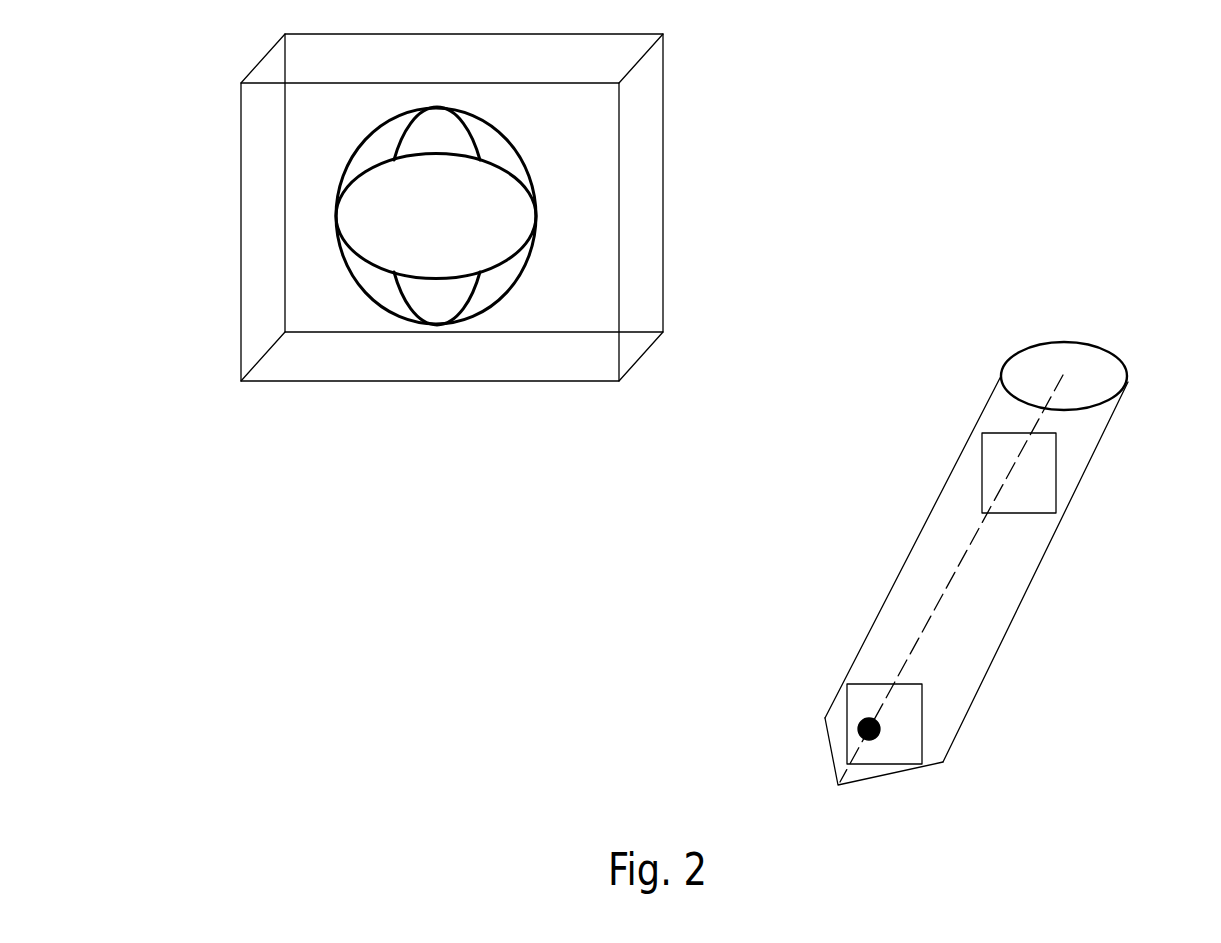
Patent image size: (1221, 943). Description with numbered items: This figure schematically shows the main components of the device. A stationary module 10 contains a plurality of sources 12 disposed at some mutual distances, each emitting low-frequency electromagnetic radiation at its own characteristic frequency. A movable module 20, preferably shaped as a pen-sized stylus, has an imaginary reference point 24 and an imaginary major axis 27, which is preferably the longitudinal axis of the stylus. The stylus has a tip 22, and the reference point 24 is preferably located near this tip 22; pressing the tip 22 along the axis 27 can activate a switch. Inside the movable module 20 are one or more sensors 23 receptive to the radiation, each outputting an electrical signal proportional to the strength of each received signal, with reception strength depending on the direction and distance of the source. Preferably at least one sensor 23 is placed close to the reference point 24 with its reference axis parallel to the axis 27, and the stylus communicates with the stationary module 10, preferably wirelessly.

The stationary module 10 is at (660, 82).
The sources 12 is at (397, 138).
The movable module 20 is at (1045, 560).
The tip 22 is at (878, 777).
The sensors 23 is at (1056, 492).
The reference point 24 is at (872, 735).
The major axis 27 is at (963, 557).